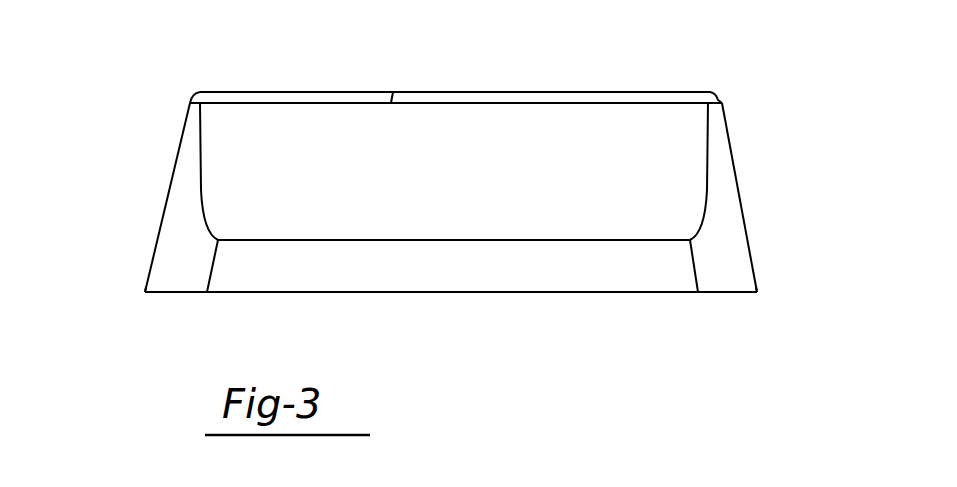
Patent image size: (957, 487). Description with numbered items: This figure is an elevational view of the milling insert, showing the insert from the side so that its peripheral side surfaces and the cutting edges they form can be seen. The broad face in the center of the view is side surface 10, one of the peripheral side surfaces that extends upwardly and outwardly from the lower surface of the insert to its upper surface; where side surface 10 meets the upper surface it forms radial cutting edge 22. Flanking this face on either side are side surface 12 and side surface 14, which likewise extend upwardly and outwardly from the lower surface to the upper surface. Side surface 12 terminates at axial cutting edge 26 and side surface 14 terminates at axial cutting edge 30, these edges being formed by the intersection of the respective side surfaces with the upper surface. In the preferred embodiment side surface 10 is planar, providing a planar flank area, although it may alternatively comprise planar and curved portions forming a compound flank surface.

The side surface 10 is at (457, 186).
The side surface 12 is at (168, 190).
The side surface 14 is at (743, 197).
The radial cutting edge 22 is at (375, 293).
The axial cutting edge 26 is at (147, 293).
The axial cutting edge 30 is at (757, 292).